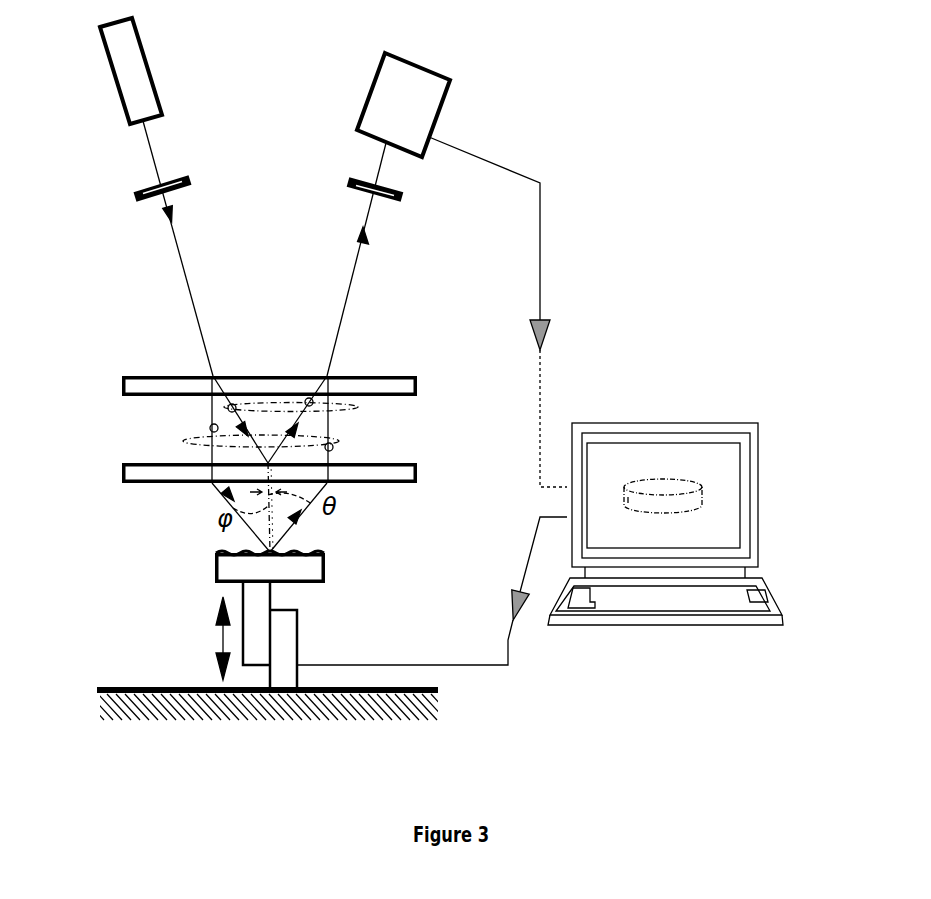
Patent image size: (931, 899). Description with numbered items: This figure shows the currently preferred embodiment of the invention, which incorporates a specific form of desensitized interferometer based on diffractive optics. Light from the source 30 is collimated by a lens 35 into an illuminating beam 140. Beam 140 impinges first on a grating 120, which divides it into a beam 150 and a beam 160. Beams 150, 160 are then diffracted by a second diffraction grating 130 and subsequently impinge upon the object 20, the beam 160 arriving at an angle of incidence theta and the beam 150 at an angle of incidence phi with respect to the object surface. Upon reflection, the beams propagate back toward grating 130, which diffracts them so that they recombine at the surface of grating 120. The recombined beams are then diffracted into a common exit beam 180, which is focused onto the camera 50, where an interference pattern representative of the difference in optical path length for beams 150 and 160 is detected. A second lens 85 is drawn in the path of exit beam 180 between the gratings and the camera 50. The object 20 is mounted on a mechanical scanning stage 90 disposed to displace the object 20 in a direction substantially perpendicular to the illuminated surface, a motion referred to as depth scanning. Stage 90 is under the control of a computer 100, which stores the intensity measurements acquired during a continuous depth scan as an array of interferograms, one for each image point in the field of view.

The object 20 is at (213, 573).
The source 30 is at (108, 71).
The lens 35 is at (184, 188).
The camera 50 is at (428, 100).
The detector lens 85 is at (394, 191).
The mechanical scanning stage 90 is at (298, 638).
The computer 100 is at (763, 492).
The grating 120 is at (121, 390).
The second diffraction grating 130 is at (121, 476).
The illuminating beam 140 is at (181, 255).
The beam 150 is at (183, 432).
The beam 160 is at (357, 411).
The common exit beam 180 is at (352, 258).